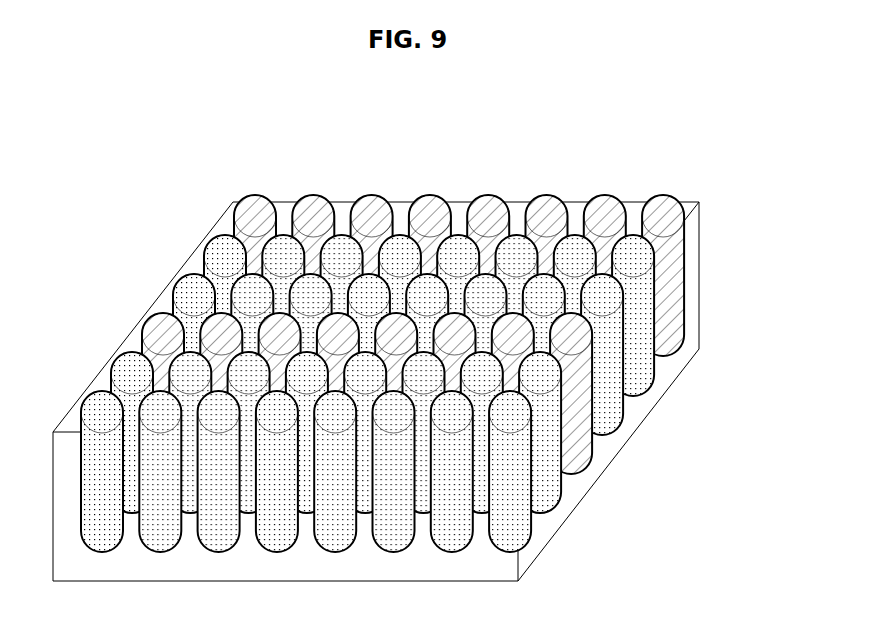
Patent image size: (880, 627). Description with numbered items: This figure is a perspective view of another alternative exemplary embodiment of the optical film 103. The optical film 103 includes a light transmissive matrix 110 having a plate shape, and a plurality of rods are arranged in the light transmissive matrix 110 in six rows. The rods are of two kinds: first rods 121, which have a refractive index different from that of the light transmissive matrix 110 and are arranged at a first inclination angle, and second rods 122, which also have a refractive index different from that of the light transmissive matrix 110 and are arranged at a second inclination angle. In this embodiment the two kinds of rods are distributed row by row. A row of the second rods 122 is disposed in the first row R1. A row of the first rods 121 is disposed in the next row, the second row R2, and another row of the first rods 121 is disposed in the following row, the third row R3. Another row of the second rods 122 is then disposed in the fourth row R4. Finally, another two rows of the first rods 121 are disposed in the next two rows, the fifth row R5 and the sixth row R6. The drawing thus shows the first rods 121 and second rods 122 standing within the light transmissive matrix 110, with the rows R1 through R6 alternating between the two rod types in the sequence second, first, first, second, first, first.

The optical film 103 is at (148, 186).
The light transmissive matrix 110 is at (574, 213).
The first rods 121 is at (215, 263).
The second rods 122 is at (314, 222).
The first row R1 is at (688, 300).
The second row R2 is at (657, 339).
The third row R3 is at (625, 378).
The fourth row R4 is at (592, 418).
The fifth row R5 is at (562, 458).
The sixth row R6 is at (531, 496).